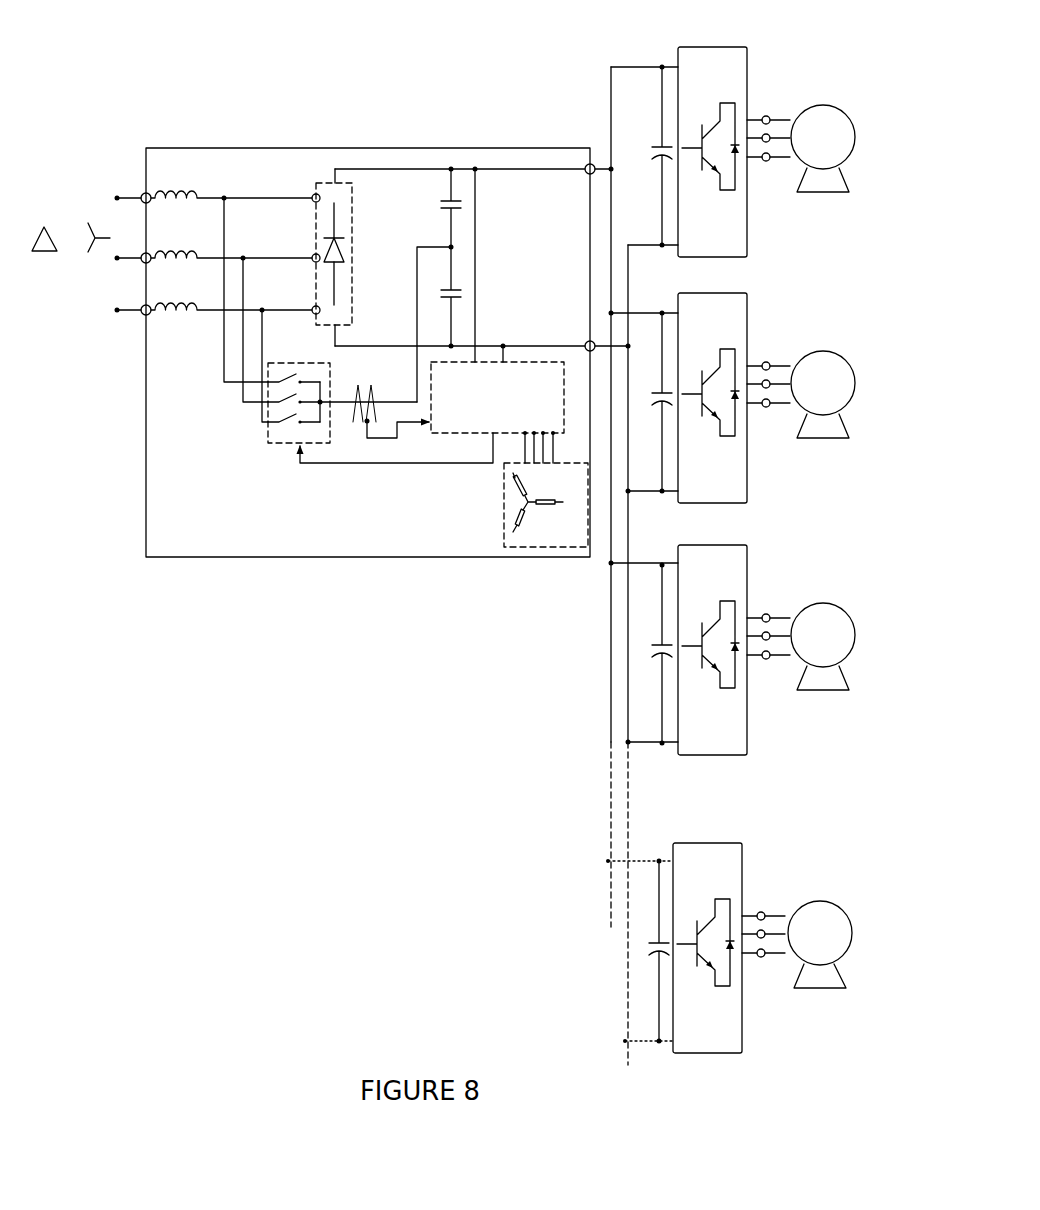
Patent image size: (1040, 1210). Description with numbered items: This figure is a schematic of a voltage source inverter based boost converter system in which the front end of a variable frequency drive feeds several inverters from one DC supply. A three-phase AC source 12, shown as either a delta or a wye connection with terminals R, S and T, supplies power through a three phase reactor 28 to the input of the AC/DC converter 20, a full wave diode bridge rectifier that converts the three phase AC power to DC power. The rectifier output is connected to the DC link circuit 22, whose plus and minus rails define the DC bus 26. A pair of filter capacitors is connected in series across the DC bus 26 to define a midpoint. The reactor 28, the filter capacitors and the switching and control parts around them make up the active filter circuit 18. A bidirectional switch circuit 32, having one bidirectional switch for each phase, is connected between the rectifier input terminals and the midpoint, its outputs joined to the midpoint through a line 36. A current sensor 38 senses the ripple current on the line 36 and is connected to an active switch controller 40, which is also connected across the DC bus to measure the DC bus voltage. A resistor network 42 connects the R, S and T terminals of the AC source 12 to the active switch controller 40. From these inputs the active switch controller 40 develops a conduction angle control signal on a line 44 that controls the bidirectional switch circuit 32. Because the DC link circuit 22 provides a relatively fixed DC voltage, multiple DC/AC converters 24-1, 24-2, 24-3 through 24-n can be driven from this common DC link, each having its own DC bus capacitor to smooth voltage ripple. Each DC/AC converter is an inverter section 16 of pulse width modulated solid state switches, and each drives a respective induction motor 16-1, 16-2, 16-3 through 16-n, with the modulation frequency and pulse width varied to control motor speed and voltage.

The AC source 12 is at (61, 230).
The three phase reactor 28 is at (177, 180).
The AC/DC converter 20 is at (315, 180).
The DC link circuit 22 is at (385, 166).
The DC bus 26 is at (388, 340).
The line 36 is at (408, 322).
The active switch controller 40 is at (538, 358).
The current sensor 38 is at (376, 391).
The active filter circuit 18 is at (262, 453).
The bidirectional switch circuit 32 is at (276, 447).
The resistor network 42 is at (501, 520).
The line 44 is at (458, 468).
The induction motor 16 is at (706, 149).
The DC/AC converter 24-1 is at (718, 152).
The DC/AC converter 24-2 is at (718, 398).
The DC/AC converter 24-3 is at (718, 650).
The DC/AC converter 24-n is at (714, 948).
The induction motor 16-1 is at (830, 124).
The induction motor 16-2 is at (830, 370).
The induction motor 16-3 is at (830, 622).
The induction motor 16-n is at (827, 920).